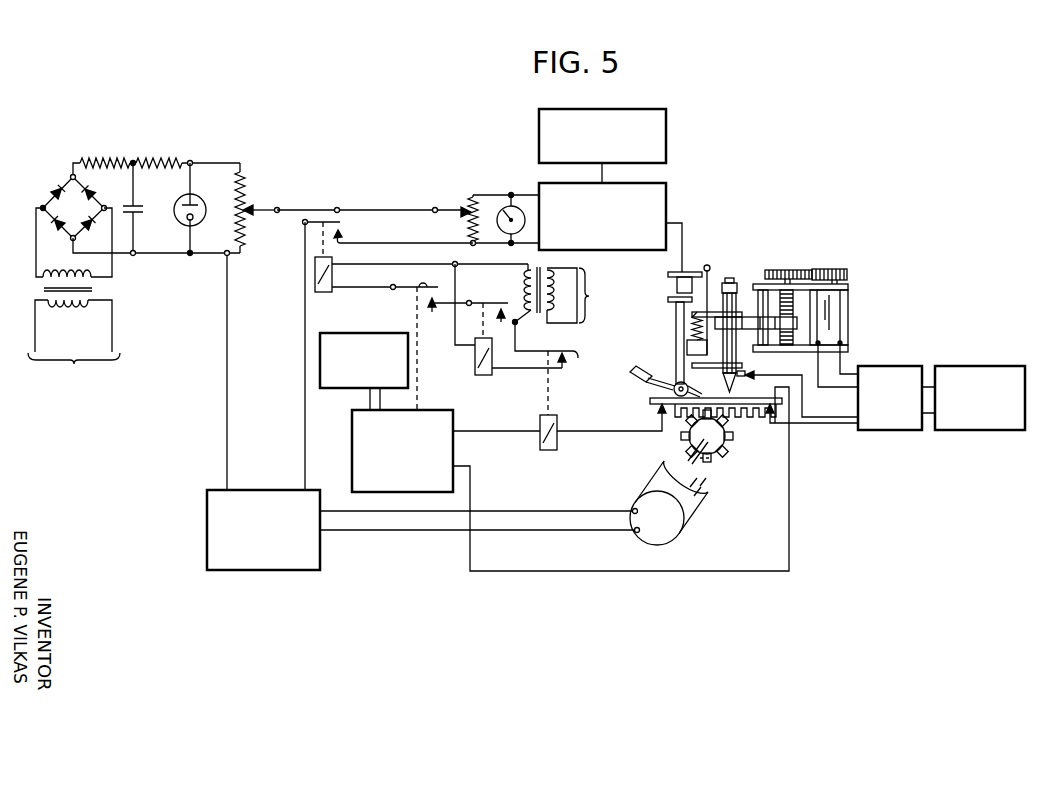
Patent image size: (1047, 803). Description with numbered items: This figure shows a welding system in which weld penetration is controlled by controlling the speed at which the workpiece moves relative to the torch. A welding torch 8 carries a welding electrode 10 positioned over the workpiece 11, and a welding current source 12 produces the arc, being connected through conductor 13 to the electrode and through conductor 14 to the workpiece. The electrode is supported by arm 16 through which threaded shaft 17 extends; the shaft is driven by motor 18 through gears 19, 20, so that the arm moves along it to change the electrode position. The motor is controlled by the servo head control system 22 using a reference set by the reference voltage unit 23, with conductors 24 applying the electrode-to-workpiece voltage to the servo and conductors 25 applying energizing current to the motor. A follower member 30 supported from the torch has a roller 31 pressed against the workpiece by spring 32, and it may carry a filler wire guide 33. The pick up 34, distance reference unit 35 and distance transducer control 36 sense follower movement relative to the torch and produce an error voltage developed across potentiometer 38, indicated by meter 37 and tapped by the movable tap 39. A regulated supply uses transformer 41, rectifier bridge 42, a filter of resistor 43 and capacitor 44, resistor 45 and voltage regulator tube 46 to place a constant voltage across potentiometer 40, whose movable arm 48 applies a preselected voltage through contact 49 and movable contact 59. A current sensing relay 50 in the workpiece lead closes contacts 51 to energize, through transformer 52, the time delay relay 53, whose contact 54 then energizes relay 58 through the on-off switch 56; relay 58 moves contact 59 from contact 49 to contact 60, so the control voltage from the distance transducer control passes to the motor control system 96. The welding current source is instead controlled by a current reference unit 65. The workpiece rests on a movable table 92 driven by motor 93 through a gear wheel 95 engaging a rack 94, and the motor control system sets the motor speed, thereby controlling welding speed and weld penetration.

The welding torch 8 is at (725, 384).
The welding electrode 10 is at (735, 396).
The workpiece 11 is at (778, 424).
The welding current source 12 is at (352, 440).
The conductor 13 is at (789, 491).
The conductor 14 is at (600, 432).
The arm 16 is at (745, 307).
The threaded shaft 17 is at (790, 336).
The motor 18 is at (820, 301).
The gear 19 is at (831, 269).
The gear 20 is at (776, 270).
The servo head control system 22 is at (892, 366).
The reference voltage unit 23 is at (976, 366).
The conductors 24 is at (848, 420).
The conductors 25 is at (849, 387).
The follower member 30 is at (687, 348).
The roller 31 is at (668, 393).
The spring 32 is at (694, 327).
The filler wire guide 33 is at (648, 388).
The pick up 34 is at (677, 283).
The distance reference unit 35 is at (666, 124).
The distance transducer control 36 is at (666, 194).
The meter 37 is at (513, 207).
The potentiometer 38 is at (468, 223).
The movable tap 39 is at (437, 208).
The potentiometer 40 is at (252, 207).
The transformer 41 is at (102, 288).
The rectifier bridge 42 is at (67, 208).
The resistor 43 is at (108, 158).
The capacitor 44 is at (134, 213).
The resistor 45 is at (170, 158).
The voltage regulator tube 46 is at (195, 212).
The movable arm 48 is at (278, 213).
The contact 49 is at (336, 214).
The current sensing relay 50 is at (541, 427).
The contacts 51 is at (576, 353).
The transformer 52 is at (540, 322).
The time delay relay 53 is at (478, 355).
The contact 54 is at (481, 303).
The on-off switch 56 is at (400, 289).
The relay 58 is at (325, 283).
The movable contact 59 is at (340, 223).
The contact 60 is at (343, 238).
The current reference unit 65 is at (381, 334).
The movable table 92 is at (750, 417).
The motor 93 is at (690, 498).
The rack 94 is at (730, 424).
The gear wheel 95 is at (705, 452).
The motor control system 96 is at (210, 520).